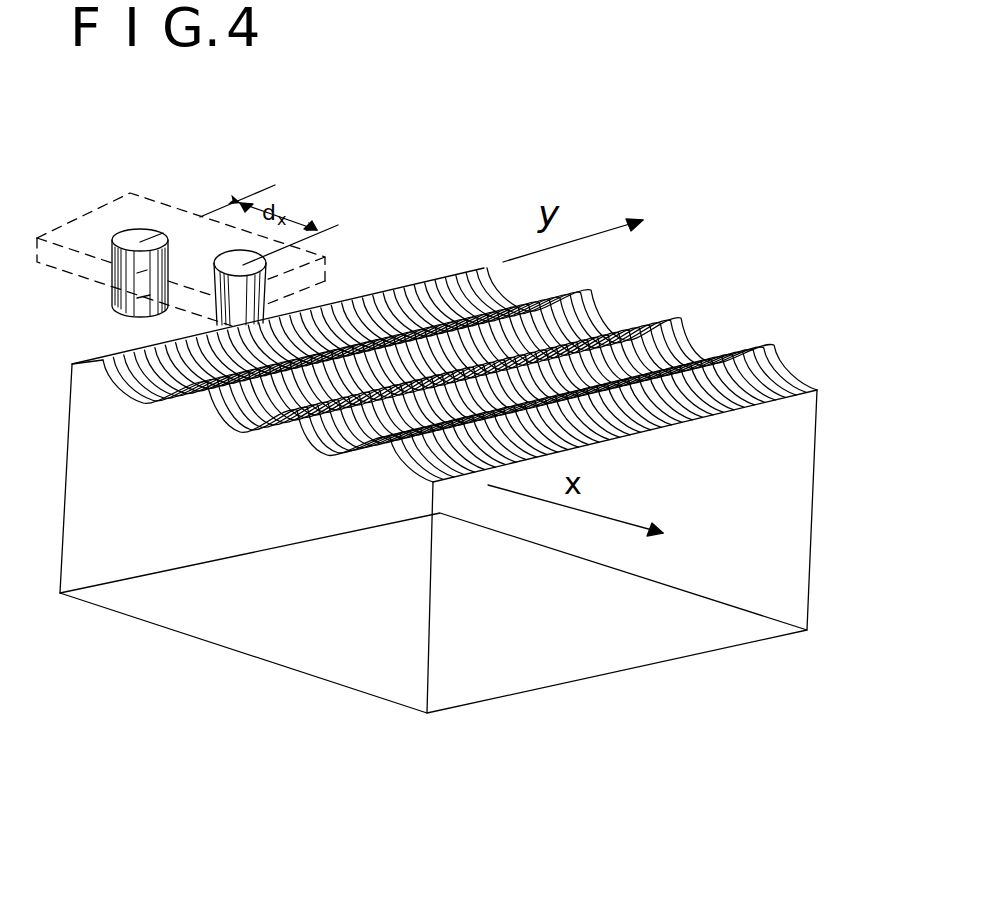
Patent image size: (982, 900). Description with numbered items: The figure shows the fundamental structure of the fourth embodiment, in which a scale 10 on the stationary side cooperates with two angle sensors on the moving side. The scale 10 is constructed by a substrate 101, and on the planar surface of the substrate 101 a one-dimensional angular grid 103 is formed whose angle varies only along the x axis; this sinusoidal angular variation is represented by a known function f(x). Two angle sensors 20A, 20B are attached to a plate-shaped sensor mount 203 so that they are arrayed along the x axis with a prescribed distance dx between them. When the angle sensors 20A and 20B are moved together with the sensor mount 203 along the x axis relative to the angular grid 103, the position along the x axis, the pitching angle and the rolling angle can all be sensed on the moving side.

The scale 10 is at (438, 508).
The substrate 101 is at (573, 673).
The one-dimensional angular grid 103 is at (647, 323).
The plate-shaped sensor mount 203 is at (137, 197).
The angle sensor 20A is at (130, 238).
The angle sensor 20B is at (240, 267).